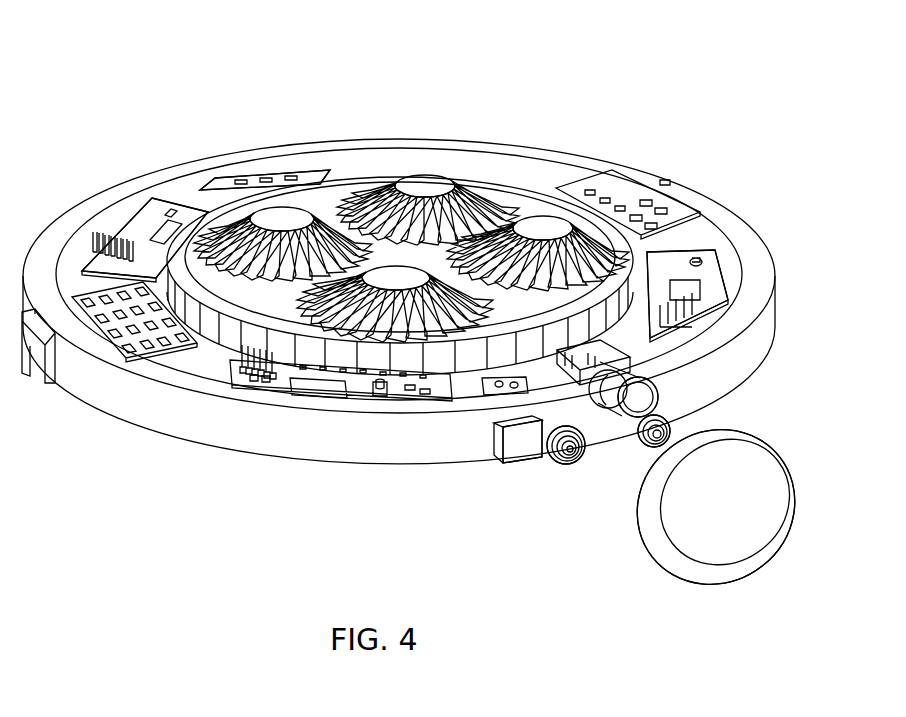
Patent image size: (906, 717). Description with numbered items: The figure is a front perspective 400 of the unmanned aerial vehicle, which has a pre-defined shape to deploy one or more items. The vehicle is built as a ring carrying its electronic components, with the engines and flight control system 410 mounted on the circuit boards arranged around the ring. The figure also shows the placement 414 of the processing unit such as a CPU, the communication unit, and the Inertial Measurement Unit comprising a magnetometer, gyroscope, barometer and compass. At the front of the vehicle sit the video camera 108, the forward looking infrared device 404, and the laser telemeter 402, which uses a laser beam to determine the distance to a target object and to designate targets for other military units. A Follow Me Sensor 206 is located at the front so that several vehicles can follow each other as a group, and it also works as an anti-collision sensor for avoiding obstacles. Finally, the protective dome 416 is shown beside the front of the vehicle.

The front perspective 400 is at (148, 52).
The engines and flight control system 410 is at (147, 217).
The placement of the processing unit, communication unit and Inertial Measurement Un 414 is at (637, 353).
The video camera 108 is at (643, 398).
The FMS (Follow Me Sensor) 206 is at (515, 448).
The forward looking infrared (FLIR) device 404 is at (573, 465).
The laser telemeter/designator/range finder 402 is at (652, 438).
The protective dome 416 is at (690, 548).